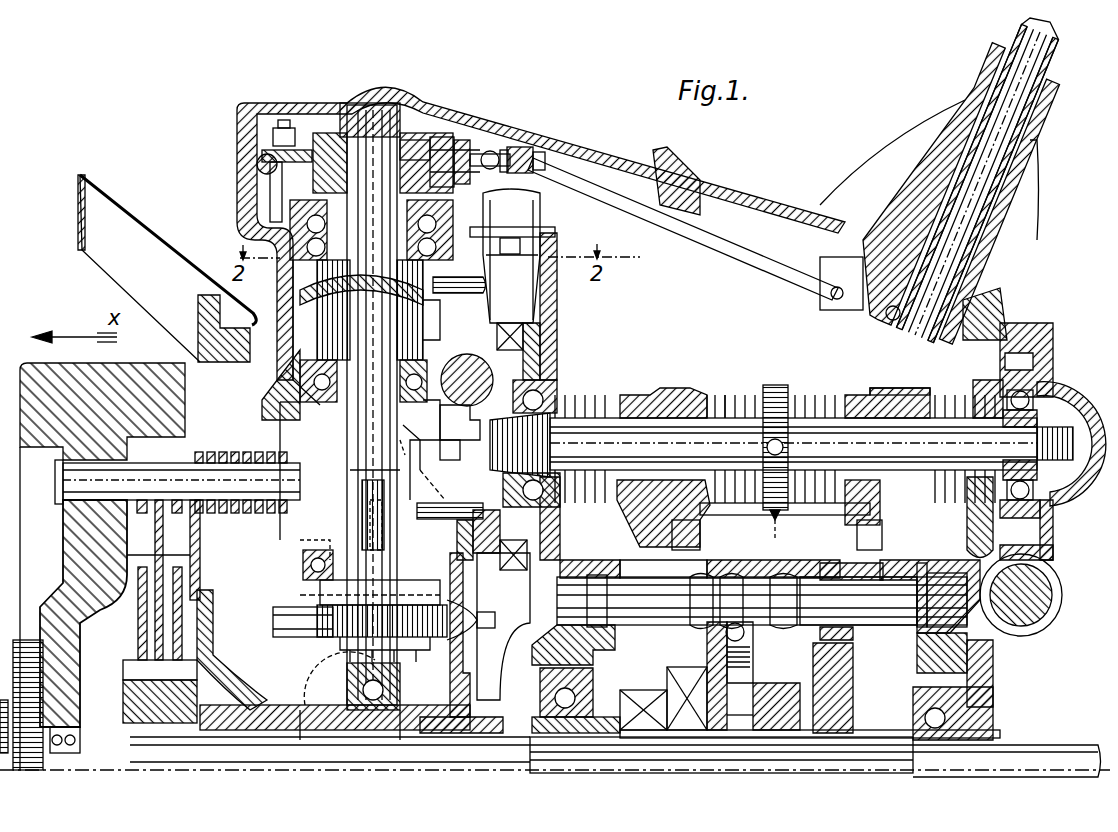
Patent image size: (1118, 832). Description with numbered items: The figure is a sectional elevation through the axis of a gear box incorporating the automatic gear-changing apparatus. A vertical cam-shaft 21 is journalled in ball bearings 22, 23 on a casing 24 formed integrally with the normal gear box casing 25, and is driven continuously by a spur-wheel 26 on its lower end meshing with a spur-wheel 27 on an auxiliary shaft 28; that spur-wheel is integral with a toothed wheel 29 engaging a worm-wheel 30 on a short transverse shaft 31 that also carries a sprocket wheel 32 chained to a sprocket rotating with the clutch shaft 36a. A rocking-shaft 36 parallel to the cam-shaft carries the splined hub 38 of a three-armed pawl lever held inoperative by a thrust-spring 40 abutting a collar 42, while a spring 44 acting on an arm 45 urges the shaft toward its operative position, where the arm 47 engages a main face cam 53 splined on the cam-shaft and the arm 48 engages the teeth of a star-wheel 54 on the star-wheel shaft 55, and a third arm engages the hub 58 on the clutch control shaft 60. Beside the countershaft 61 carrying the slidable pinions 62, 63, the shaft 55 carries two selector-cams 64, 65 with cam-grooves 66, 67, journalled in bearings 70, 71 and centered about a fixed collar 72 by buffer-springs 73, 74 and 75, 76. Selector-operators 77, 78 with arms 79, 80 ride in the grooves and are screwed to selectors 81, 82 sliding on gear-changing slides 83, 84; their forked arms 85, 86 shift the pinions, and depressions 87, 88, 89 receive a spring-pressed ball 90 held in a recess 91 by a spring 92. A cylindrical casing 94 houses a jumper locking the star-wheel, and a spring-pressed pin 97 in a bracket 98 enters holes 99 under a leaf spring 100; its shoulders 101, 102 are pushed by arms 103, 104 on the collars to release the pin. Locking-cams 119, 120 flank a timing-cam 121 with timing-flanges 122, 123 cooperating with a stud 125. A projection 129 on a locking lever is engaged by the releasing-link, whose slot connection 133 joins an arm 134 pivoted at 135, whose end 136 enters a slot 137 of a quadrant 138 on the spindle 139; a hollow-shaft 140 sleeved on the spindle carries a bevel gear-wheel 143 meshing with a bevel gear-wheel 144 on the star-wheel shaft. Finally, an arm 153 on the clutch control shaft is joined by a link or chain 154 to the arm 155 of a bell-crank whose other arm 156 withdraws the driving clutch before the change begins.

The cam-shaft 21 is at (362, 505).
The ball bearing 22 is at (285, 228).
The ball bearing 23 is at (303, 560).
The casing 24 is at (292, 292).
The gear box casing 25 is at (200, 312).
The spur-wheel 26 is at (320, 585).
The spur-wheel 27 is at (356, 595).
The auxiliary shaft 28 is at (330, 548).
The toothed wheel 29 is at (325, 637).
The worm-wheel 30 is at (345, 650).
The short shaft 31 is at (273, 620).
The sprocket wheel 32 is at (465, 651).
The rocking-shaft 36 is at (405, 133).
The clutch shaft 36a is at (330, 685).
The hub 38 is at (428, 339).
The thrust-spring 40 is at (422, 465).
The collar 42 is at (370, 520).
The spring 44 is at (525, 150).
The arm 45 is at (470, 135).
The pawl-lever arm 47 is at (465, 294).
The pawl-lever arm 48 is at (447, 447).
The main face cam 53 is at (290, 312).
The star-wheel 54 is at (548, 350).
The star-wheel shaft 55 is at (640, 392).
The hub 58 is at (525, 326).
The clutch control shaft 60 is at (550, 385).
The countershaft 61 is at (888, 745).
The slidable pinion 62 is at (670, 678).
The slidable pinion 63 is at (853, 672).
The selector-cam 64 is at (610, 430).
The selector-cam 65 is at (885, 392).
The cam-groove 66 is at (665, 530).
The cam-groove 67 is at (845, 520).
The bearing 70 is at (560, 510).
The bearing 71 is at (1040, 390).
The fixed collar 72 is at (780, 386).
The buffer-spring 73 is at (598, 392).
The buffer-spring 74 is at (730, 392).
The buffer-spring 75 is at (825, 392).
The buffer-spring 76 is at (972, 392).
The selector-operator 77 is at (722, 558).
The selector-operator 78 is at (798, 560).
The arm 79 is at (672, 540).
The arm 80 is at (884, 536).
The selector 81 is at (710, 636).
The selector 82 is at (735, 700).
The gear-changing slide 83 is at (571, 631).
The gear-changing slide 84 is at (552, 640).
The forked arm 85 is at (735, 714).
The forked arm 86 is at (727, 727).
The circumferential depression 87 is at (700, 590).
The circumferential depression 88 is at (760, 612).
The circumferential depression 89 is at (820, 602).
The spring-pressed ball 90 is at (727, 640).
The recess 91 is at (752, 662).
The spring 92 is at (753, 645).
The cylindrical casing 94 is at (517, 293).
The spring-pressed pin 97 is at (530, 563).
The bracket 98 is at (503, 555).
The holes 99 is at (550, 530).
The leaf spring 100 is at (405, 452).
The shoulder 101 is at (395, 480).
The shoulder 102 is at (445, 520).
The arm 103 is at (452, 485).
The arm 104 is at (485, 562).
The locking-cam 119 is at (276, 186).
The locking-cam 120 is at (430, 137).
The timing-cam 121 is at (482, 150).
The timing-flange 122 is at (272, 142).
The timing-flange 123 is at (262, 158).
The stud 125 is at (457, 137).
The projection 129 is at (497, 155).
The slot connection 133 is at (535, 158).
The arm 134 is at (545, 167).
The pivot 135 is at (700, 226).
The arm end 136 is at (833, 297).
The slot 137 is at (825, 295).
The quadrant 138 is at (888, 316).
The spindle 139 is at (1037, 240).
The hollow-shaft 140 is at (1047, 112).
The bevel gear-wheel 143 is at (977, 330).
The bevel gear-wheel 144 is at (1040, 351).
The arm 153 is at (456, 422).
The link or chain 154 is at (466, 668).
The bell-crank arm 155 is at (400, 740).
The bell-crank arm 156 is at (300, 740).